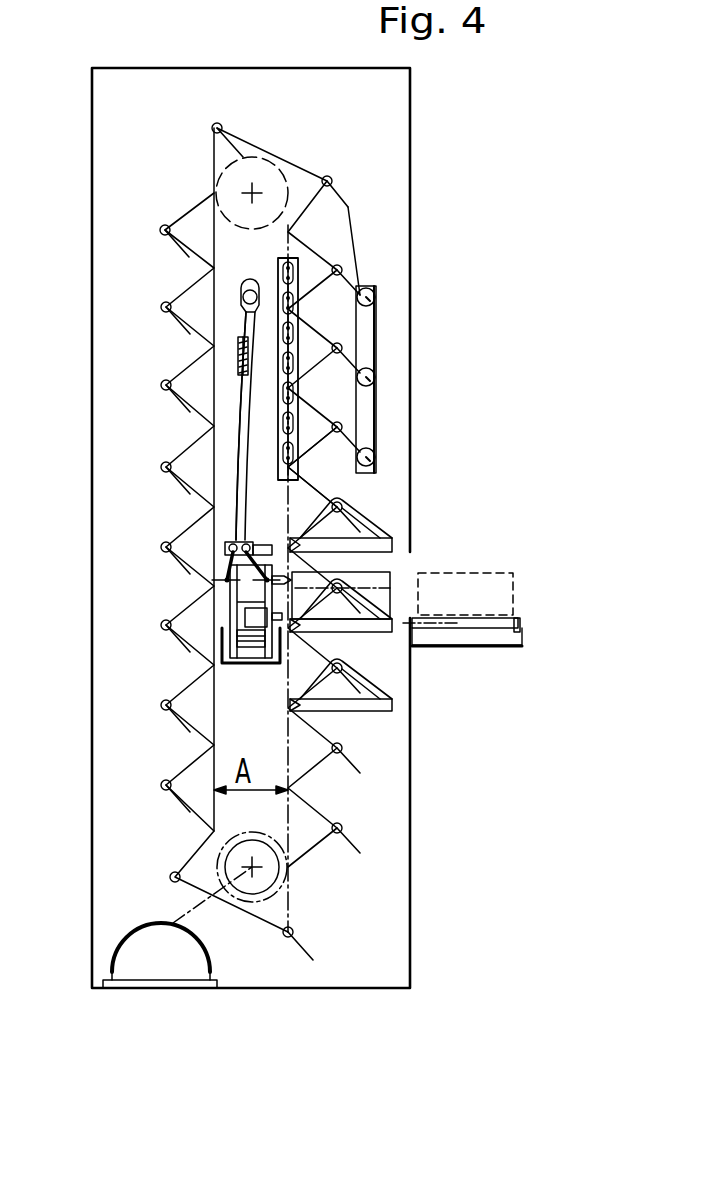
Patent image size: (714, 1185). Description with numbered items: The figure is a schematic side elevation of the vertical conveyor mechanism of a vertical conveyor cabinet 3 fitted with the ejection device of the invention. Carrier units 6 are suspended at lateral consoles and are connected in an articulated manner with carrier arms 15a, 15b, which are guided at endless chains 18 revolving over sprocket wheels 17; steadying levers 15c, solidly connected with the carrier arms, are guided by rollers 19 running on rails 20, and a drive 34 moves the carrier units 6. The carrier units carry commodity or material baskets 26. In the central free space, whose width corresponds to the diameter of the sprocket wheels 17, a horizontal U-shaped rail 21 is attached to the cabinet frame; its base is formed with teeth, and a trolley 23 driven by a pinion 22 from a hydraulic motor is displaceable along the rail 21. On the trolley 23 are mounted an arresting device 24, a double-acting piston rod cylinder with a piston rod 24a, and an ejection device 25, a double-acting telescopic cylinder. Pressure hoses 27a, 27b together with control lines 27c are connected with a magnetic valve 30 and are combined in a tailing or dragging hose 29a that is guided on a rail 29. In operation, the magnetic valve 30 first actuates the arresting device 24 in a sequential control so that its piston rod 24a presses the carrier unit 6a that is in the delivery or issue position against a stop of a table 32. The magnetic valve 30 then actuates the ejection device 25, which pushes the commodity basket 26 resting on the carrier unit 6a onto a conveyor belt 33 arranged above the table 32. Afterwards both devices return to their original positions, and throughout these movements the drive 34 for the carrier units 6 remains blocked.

The vertical conveyor cabinet 3 is at (395, 790).
The carrier unit 6 is at (387, 533).
The carrier unit in delivery position 6a is at (387, 632).
The carrier arm 15a is at (322, 415).
The carrier arm 15b is at (320, 447).
The steadying lever 15c is at (356, 286).
The sprocket wheel 17 is at (265, 175).
The endless chain 18 is at (296, 272).
The roller 19 is at (372, 377).
The rail 20 is at (368, 328).
The U-shaped rail 21 is at (223, 657).
The pinion 22 is at (240, 645).
The trolley 23 is at (233, 615).
The arresting device 24 is at (260, 617).
The piston rod 24a is at (277, 590).
The ejection device 25 is at (240, 582).
The commodity basket 26 is at (432, 583).
The pressure hose 27a is at (240, 350).
The pressure hose 27b is at (242, 353).
The control line 27c is at (238, 362).
The rail 29 is at (247, 292).
The dragging hose 29a is at (240, 417).
The magnetic valve 30 is at (230, 545).
The table 32 is at (517, 642).
The conveyor belt 33 is at (510, 623).
The drive 34 is at (162, 973).